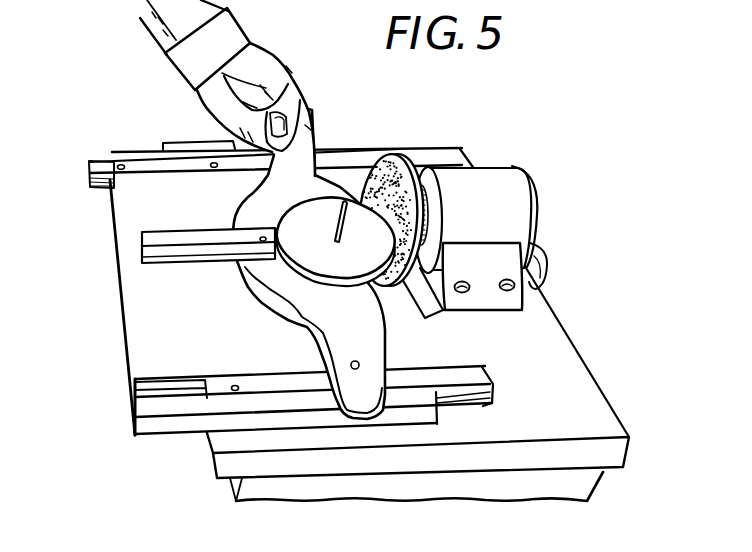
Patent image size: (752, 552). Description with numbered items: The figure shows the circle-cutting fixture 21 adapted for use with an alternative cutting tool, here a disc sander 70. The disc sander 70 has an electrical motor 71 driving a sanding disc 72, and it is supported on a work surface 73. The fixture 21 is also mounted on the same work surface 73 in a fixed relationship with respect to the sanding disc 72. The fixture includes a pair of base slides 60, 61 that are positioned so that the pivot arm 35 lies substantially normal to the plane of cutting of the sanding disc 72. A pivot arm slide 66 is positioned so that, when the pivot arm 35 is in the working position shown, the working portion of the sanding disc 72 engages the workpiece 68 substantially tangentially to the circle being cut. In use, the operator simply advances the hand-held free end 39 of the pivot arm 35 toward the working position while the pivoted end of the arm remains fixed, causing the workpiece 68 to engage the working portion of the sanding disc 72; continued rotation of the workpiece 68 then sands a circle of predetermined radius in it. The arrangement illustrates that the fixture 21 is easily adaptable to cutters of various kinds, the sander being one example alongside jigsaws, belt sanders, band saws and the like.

The fixture 21 is at (105, 427).
The pivot arm 35 is at (347, 395).
The free end 39 is at (297, 127).
The base slide 60 is at (207, 383).
The base slide 61 is at (97, 182).
The pivot arm slide 66 is at (146, 243).
The workpiece 68 is at (287, 214).
The disc sander 70 is at (502, 216).
The electrical motor 71 is at (517, 200).
The sanding disc 72 is at (379, 158).
The work surface 73 is at (569, 356).